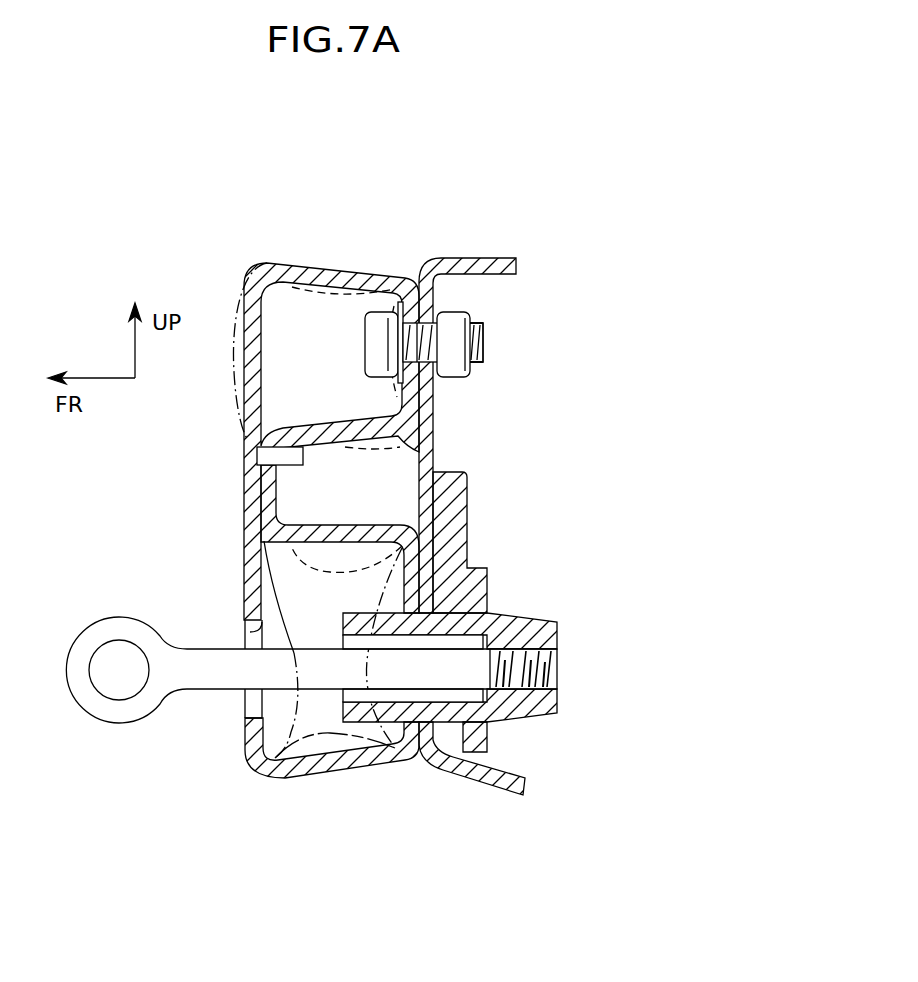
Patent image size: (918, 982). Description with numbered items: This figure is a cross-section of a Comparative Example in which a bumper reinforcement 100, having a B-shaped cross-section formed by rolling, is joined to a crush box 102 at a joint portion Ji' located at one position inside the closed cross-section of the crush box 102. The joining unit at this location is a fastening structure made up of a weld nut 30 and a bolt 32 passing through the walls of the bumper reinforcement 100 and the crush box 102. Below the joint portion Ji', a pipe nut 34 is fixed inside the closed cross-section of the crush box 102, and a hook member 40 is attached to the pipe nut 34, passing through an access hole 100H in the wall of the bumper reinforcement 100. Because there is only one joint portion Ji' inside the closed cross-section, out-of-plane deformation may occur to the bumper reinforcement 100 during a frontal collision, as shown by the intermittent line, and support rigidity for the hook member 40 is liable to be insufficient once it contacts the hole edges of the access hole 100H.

The bumper reinforcement 100 is at (272, 252).
The crush box 102 is at (481, 252).
The access hole 100H is at (247, 630).
The bolt 32 is at (377, 348).
The weld nut 30 is at (452, 368).
The joint portion Ji' is at (521, 342).
The pipe nut 34 is at (520, 607).
The hook member 40 is at (215, 699).